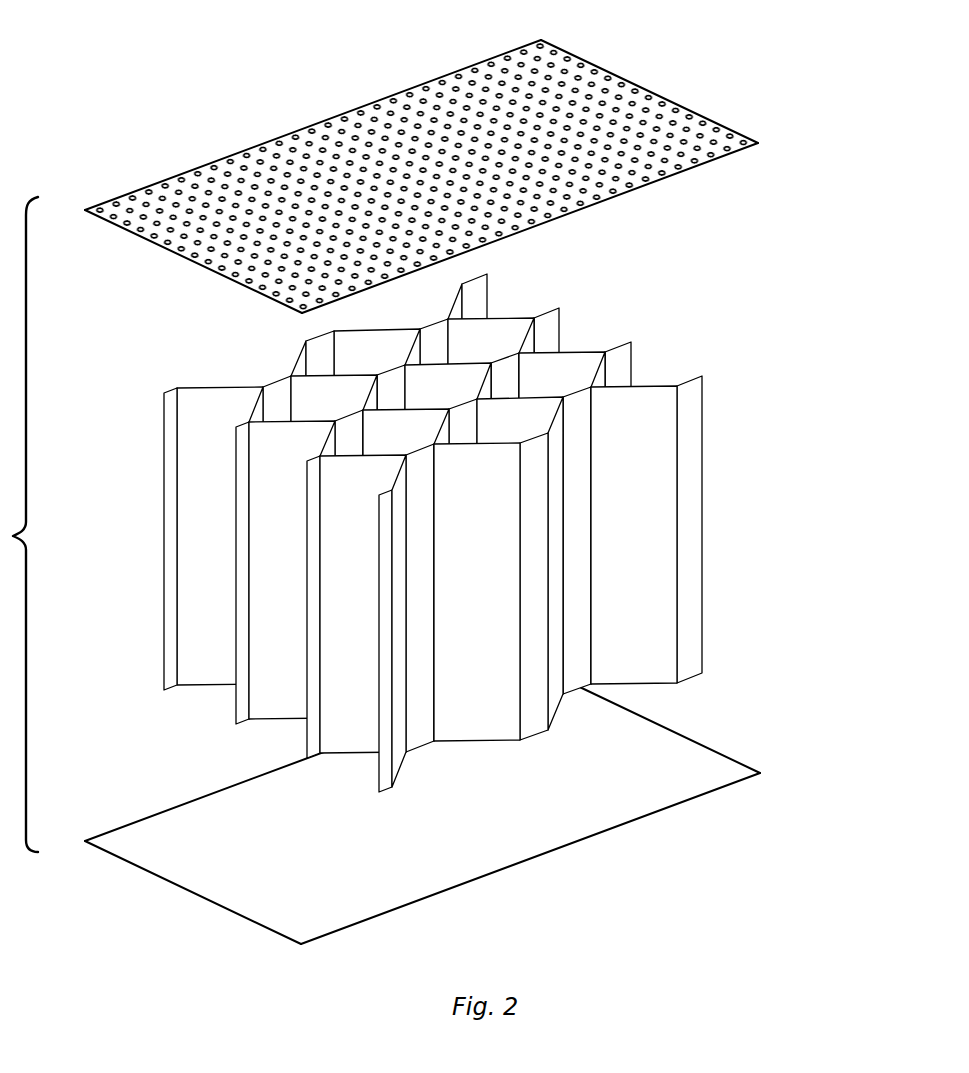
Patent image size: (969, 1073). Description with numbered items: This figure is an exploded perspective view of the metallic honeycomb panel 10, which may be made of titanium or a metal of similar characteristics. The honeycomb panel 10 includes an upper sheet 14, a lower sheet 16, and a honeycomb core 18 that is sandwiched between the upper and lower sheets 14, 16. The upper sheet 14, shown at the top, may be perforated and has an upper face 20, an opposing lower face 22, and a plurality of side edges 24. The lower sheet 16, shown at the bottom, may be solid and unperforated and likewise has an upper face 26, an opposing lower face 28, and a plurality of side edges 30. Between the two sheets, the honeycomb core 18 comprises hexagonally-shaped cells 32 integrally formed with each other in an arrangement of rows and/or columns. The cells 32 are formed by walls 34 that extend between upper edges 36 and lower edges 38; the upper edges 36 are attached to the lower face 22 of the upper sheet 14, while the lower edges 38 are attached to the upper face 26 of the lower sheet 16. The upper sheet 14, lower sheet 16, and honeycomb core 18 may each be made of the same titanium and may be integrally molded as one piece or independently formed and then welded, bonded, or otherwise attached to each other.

The honeycomb panel 10 is at (807, 70).
The upper sheet 14 is at (441, 168).
The lower sheet 16 is at (435, 818).
The honeycomb core 18 is at (480, 555).
The upper face 20 is at (421, 176).
The lower face 22 is at (738, 152).
The side edges 24 is at (364, 102).
The upper face 26 is at (314, 790).
The lower face 28 is at (737, 785).
The side edges 30 is at (628, 826).
The cells 32 is at (541, 378).
The walls 34 is at (640, 540).
The upper edges 36 is at (190, 390).
The lower edges 38 is at (395, 788).